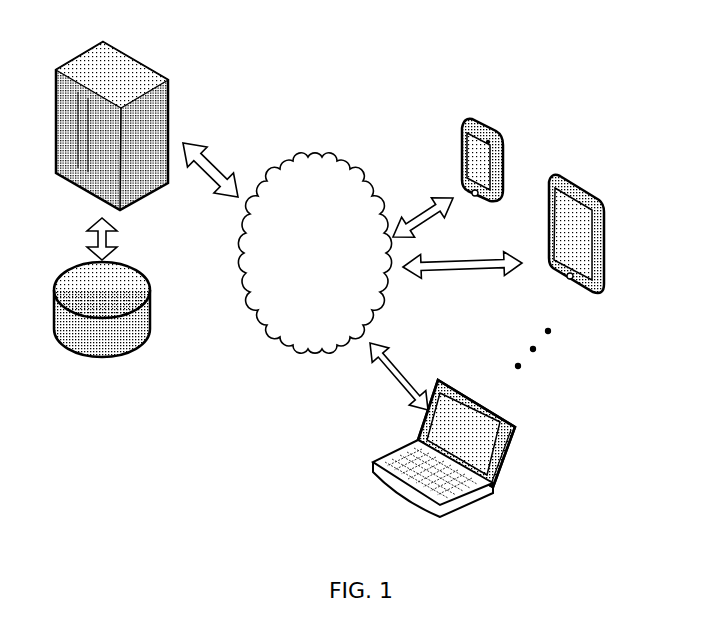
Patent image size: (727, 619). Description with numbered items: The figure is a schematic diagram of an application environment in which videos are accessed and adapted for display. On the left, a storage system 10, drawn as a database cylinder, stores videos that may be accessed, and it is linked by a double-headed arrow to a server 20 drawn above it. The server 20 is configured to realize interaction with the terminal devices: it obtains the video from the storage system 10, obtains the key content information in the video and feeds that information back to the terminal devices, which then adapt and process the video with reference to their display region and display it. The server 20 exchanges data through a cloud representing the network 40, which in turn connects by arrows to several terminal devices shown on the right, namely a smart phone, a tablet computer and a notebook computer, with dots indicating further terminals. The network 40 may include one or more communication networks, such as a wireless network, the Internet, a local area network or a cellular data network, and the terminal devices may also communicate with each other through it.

The storage system 10 is at (148, 278).
The server 20 is at (150, 67).
The network 40 is at (314, 253).